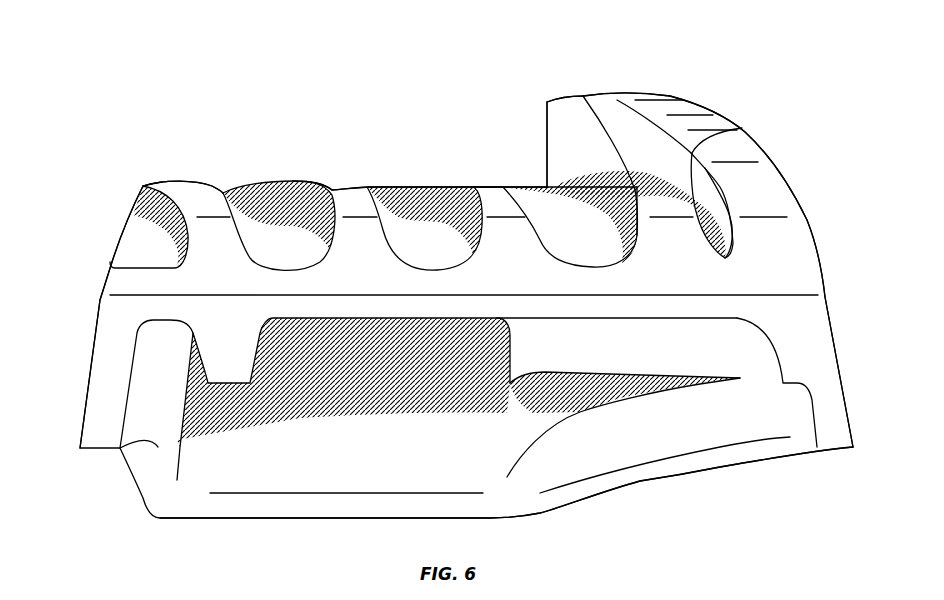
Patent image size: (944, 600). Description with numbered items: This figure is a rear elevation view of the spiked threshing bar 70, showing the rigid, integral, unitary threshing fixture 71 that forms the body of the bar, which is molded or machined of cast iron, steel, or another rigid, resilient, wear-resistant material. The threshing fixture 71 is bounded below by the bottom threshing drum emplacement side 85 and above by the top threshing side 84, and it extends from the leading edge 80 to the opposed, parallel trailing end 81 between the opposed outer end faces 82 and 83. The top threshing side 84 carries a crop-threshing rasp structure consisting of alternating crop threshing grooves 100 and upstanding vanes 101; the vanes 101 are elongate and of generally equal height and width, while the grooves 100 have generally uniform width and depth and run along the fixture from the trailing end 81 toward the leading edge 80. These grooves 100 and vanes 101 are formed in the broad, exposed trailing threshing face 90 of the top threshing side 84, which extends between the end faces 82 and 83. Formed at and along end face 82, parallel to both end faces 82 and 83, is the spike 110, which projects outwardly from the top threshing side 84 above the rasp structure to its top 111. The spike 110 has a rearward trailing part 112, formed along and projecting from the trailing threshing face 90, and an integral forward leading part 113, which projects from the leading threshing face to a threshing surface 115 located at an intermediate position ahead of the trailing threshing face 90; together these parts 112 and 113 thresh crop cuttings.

The threshing bar 70 is at (778, 52).
The threshing fixture 71 is at (148, 184).
The leading edge 80 is at (340, 520).
The trailing end 81 is at (778, 307).
The end face 82 is at (828, 313).
The end face 83 is at (92, 345).
The top threshing side 84 is at (448, 256).
The bottom threshing drum emplacement side 85 is at (416, 454).
The trailing threshing face 90 is at (440, 187).
The crop threshing grooves 100 is at (132, 243).
The vanes 101 is at (197, 195).
The spike 110 is at (610, 117).
The top 111 is at (583, 96).
The trailing part 112 is at (745, 130).
The leading part 113 is at (567, 112).
The threshing surface 115 is at (547, 125).